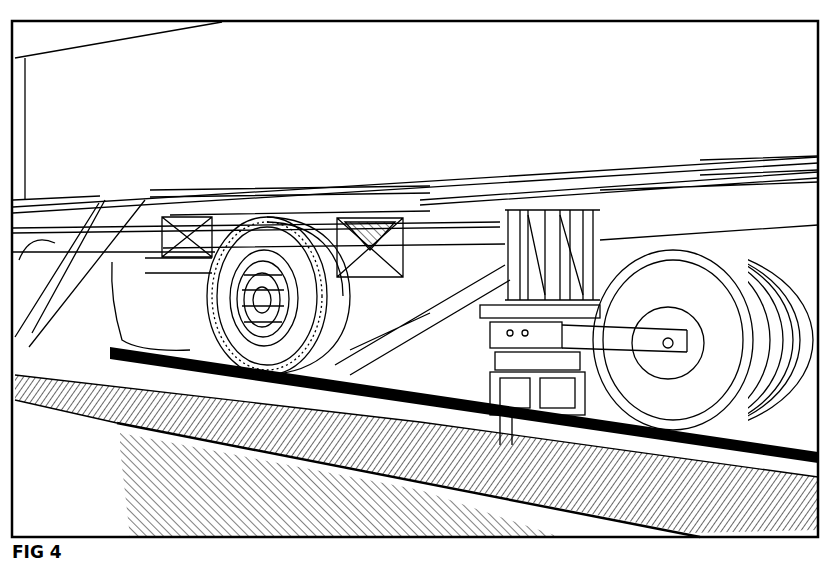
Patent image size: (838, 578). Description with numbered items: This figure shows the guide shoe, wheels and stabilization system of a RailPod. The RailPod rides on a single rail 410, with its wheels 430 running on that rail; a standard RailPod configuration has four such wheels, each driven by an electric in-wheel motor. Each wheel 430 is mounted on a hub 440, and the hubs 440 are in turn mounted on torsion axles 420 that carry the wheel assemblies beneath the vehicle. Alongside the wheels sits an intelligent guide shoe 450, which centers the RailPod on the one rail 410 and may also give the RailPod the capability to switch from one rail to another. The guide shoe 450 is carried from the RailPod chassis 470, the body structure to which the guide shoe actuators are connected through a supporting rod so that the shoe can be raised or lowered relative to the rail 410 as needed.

The single rail 410 is at (477, 460).
The torsion axle 420 is at (397, 235).
The wheel 430 is at (268, 373).
The hub 440 is at (267, 312).
The intelligent guide shoe 450 is at (563, 338).
The RailPod chassis 470 is at (404, 133).